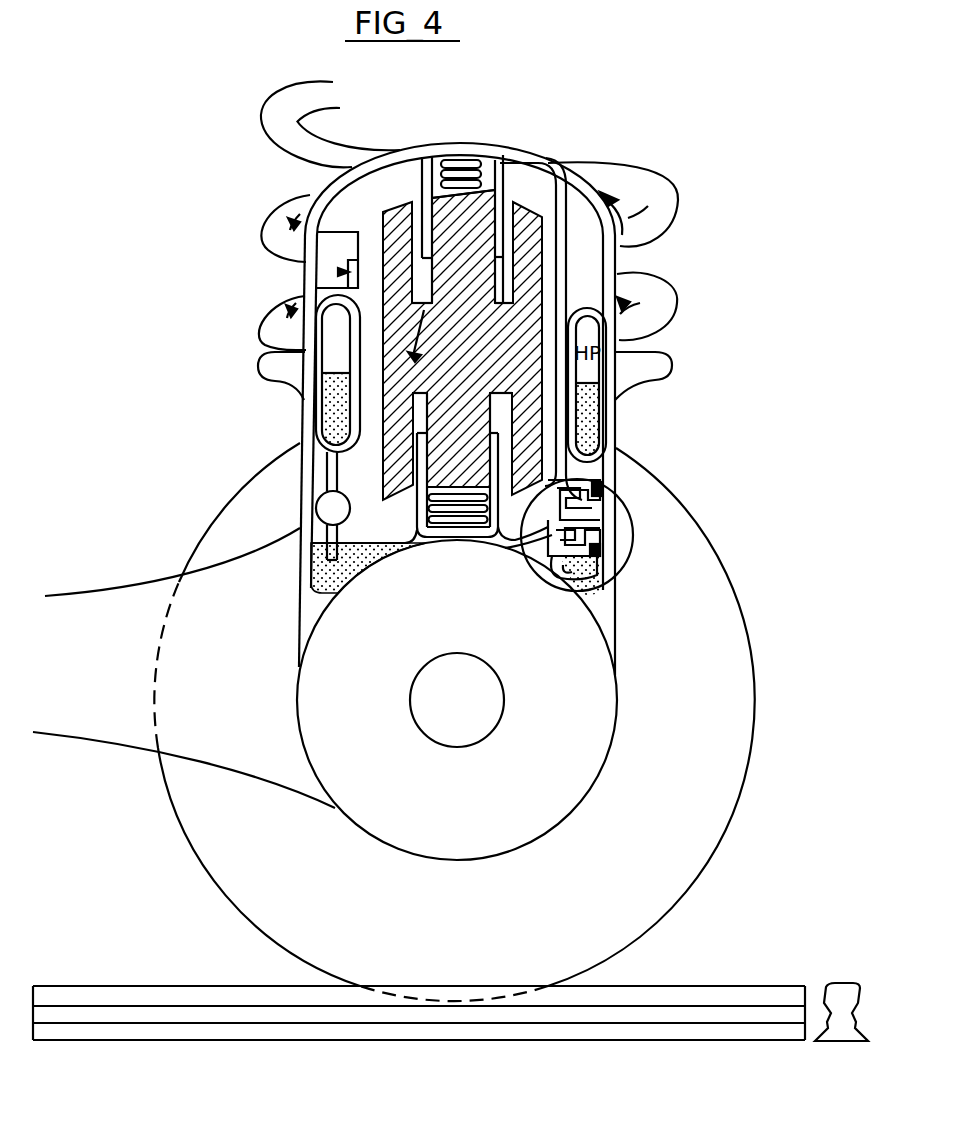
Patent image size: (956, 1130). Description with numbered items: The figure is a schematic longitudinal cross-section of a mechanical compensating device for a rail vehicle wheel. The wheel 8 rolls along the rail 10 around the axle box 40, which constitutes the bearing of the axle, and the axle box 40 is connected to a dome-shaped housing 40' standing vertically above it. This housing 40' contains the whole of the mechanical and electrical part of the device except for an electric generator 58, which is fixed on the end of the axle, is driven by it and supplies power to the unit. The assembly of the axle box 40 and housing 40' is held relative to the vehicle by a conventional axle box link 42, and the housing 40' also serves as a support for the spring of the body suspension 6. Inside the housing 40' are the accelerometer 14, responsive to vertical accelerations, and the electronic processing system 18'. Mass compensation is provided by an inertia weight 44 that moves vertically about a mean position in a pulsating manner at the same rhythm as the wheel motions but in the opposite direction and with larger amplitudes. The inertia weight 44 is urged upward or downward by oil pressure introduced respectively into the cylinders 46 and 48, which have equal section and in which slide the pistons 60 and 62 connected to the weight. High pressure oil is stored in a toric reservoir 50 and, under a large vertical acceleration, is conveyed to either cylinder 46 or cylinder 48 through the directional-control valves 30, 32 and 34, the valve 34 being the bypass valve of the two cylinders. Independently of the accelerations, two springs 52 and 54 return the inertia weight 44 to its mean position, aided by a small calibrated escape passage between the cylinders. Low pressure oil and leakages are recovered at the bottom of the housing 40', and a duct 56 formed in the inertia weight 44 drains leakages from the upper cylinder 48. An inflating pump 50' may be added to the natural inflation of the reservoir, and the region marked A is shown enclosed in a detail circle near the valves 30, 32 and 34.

The body suspension spring 6 is at (663, 210).
The wheel 8 is at (720, 768).
The rail 10 is at (830, 995).
The accelerometer 14 is at (340, 272).
The electronic processing system 18' is at (287, 254).
The directional-control valve 30 is at (608, 466).
The directional-control valve 32 is at (600, 548).
The bypass valve 34 is at (600, 590).
The axle box 40 is at (482, 700).
The dome-shaped housing 40' is at (583, 329).
The axle box link 42 is at (100, 735).
The inertia weight 44 is at (496, 342).
The cylinder 46 is at (416, 504).
The cylinder 48 is at (437, 168).
The reservoir 50 is at (298, 373).
The inflating pump 50' is at (300, 506).
The spring 52 is at (448, 520).
The spring 54 is at (440, 188).
The duct 56 is at (416, 357).
The electric generator 58 is at (470, 680).
The piston 60 is at (472, 458).
The piston 62 is at (475, 256).
The detail area A is at (637, 520).